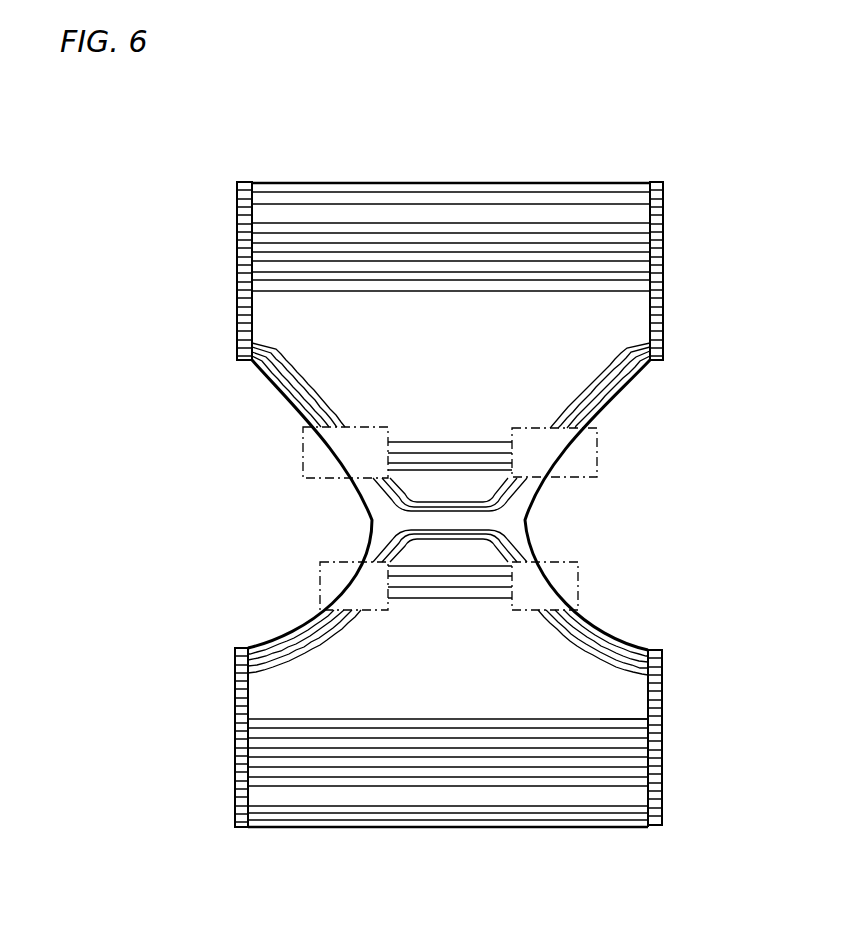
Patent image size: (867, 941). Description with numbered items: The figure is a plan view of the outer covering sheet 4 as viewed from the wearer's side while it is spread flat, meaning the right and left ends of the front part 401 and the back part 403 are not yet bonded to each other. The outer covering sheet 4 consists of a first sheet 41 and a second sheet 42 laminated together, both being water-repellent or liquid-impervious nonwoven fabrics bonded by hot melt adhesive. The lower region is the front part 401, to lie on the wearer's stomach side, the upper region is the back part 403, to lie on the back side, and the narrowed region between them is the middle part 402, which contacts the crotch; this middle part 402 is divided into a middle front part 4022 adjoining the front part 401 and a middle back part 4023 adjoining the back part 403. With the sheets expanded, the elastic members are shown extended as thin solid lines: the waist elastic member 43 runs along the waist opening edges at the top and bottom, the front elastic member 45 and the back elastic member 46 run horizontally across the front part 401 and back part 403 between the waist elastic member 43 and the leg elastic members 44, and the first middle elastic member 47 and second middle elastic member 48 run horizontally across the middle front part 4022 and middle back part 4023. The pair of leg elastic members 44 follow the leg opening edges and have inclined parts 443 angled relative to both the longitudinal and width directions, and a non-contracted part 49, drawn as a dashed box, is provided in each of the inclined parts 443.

The outer covering sheet 4 is at (222, 160).
The first sheet 41 is at (628, 706).
The second sheet 42 is at (615, 690).
The waist elastic member 43 is at (600, 197).
The leg elastic members 44 is at (300, 385).
The inclined parts 443 is at (310, 402).
The front elastic member 45 is at (597, 757).
The back elastic member 46 is at (600, 252).
The first middle elastic member 47 is at (447, 592).
The second middle elastic member 48 is at (452, 445).
The non-contracted part 49 is at (365, 443).
The front part 401 is at (362, 703).
The middle part 402 is at (272, 518).
The back part 403 is at (362, 300).
The middle front part 4022 is at (450, 567).
The middle back part 4023 is at (448, 473).